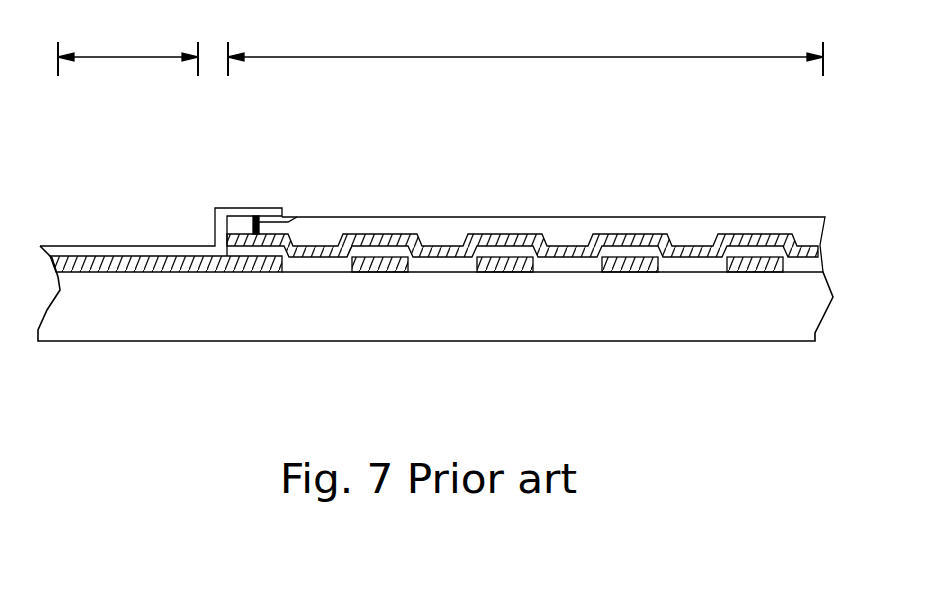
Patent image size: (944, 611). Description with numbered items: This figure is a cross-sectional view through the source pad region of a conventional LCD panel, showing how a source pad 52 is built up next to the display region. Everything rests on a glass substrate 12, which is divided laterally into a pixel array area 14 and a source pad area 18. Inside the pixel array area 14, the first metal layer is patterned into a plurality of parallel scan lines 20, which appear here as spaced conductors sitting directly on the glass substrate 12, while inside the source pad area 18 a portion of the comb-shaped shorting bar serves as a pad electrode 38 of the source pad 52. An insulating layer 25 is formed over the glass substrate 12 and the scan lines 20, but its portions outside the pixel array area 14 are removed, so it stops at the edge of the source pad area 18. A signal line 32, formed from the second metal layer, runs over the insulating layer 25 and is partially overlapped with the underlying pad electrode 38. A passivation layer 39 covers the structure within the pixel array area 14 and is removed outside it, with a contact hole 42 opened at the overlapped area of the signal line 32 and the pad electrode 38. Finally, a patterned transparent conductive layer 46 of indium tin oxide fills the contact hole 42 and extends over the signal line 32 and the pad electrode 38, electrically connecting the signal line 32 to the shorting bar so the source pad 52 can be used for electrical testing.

The glass substrate 12 is at (482, 318).
The pixel array area 14 is at (525, 52).
The source pad area 18 is at (128, 51).
The scan lines 20 is at (631, 272).
The insulating layer 25 is at (806, 268).
The signal lines 32 is at (819, 251).
The pad electrodes 38 is at (172, 264).
The passivation layer 39 is at (806, 233).
The contact hole 42 is at (302, 217).
The patterned transparent conductive layers 46 is at (228, 208).
The source pads 52 is at (100, 152).